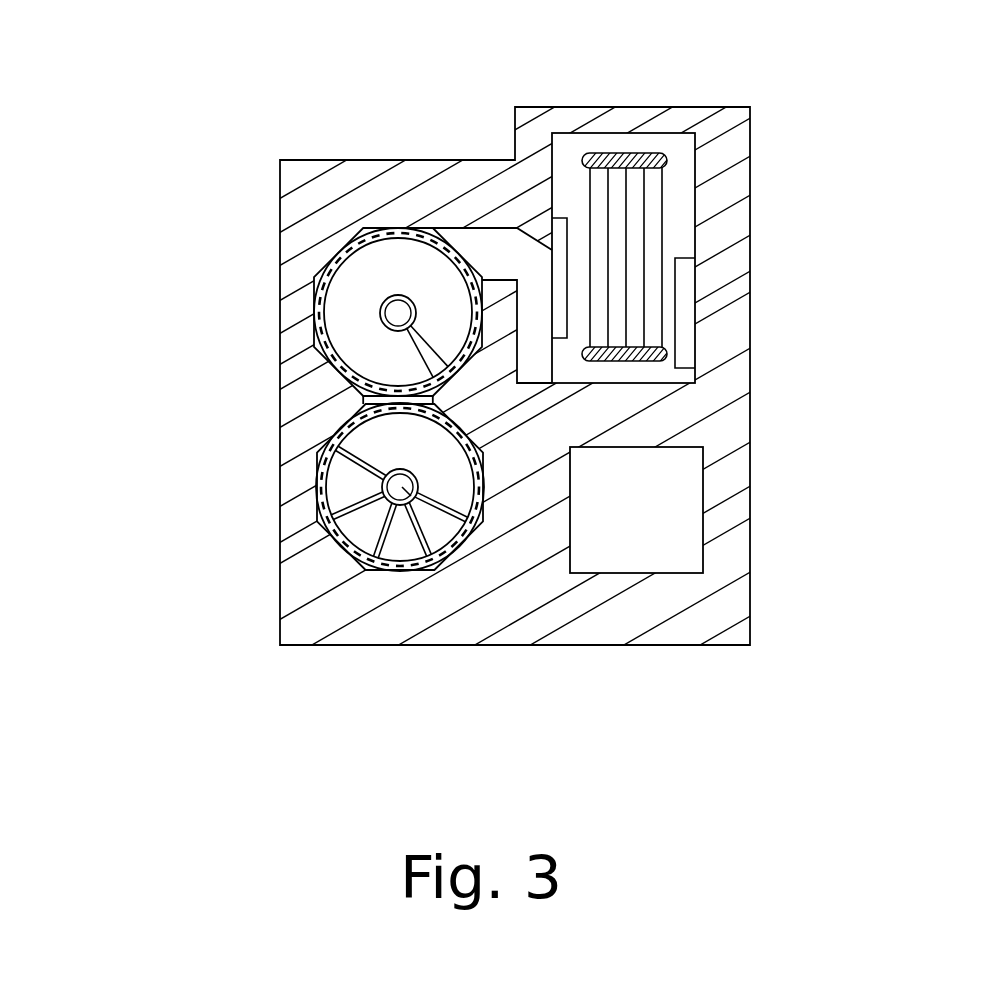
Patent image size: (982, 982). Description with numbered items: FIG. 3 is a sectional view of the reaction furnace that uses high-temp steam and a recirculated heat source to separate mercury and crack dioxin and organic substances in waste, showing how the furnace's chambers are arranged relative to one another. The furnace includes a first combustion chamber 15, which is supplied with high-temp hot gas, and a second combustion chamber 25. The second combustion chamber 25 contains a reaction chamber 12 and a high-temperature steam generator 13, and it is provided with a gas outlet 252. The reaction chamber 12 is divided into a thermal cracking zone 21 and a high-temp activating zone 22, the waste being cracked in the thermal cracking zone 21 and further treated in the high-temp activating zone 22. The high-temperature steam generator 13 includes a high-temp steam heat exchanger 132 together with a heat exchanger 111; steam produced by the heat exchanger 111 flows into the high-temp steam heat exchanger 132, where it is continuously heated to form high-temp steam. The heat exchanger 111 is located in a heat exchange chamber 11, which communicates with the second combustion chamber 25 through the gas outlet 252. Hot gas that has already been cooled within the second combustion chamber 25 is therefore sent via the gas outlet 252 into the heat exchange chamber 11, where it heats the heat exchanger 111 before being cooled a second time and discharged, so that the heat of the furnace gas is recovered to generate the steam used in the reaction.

The heat exchange chamber 11 is at (568, 152).
The heat exchanger 111 is at (617, 306).
The reaction chamber 12 is at (147, 478).
The high-temperature steam generator 13 is at (133, 320).
The high-temp steam heat exchanger 132 is at (318, 348).
The first combustion chamber 15 is at (637, 497).
The thermal cracking zone 21 is at (348, 342).
The high-temp activating zone 22 is at (338, 485).
The second combustion chamber 25 is at (321, 270).
The gas outlet 252 is at (515, 257).